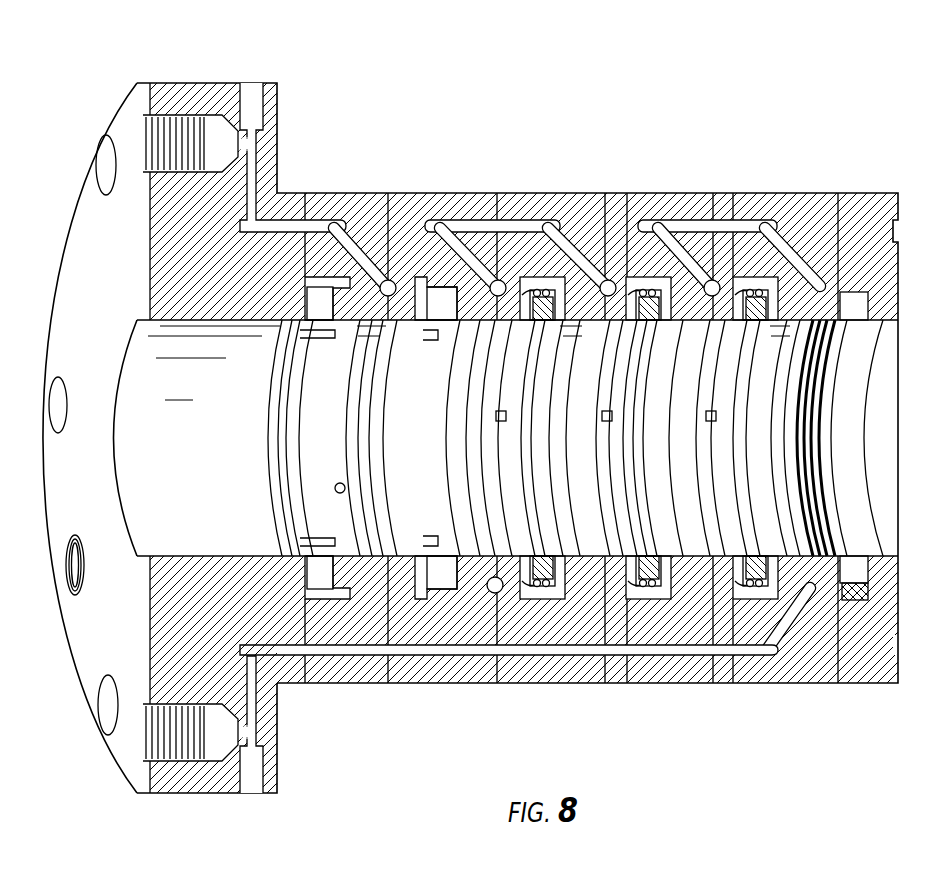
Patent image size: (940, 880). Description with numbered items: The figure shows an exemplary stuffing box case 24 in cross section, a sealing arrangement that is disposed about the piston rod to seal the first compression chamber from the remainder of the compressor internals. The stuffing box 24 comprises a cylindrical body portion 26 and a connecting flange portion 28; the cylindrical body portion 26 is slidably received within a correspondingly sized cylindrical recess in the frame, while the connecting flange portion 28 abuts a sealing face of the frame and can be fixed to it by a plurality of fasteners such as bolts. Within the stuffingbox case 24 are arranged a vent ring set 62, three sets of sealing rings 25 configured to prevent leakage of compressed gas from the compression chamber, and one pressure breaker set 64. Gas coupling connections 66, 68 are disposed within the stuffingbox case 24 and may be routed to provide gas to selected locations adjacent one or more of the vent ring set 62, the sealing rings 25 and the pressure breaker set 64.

The stuffing box 24 is at (470, 449).
The sealing rings 25 is at (552, 193).
The cylindrical body portion 26 is at (572, 683).
The connecting flange portion 28 is at (204, 88).
The vent ring set 62 is at (320, 695).
The pressure breaker set 64 is at (838, 692).
The gas coupling connection 66 is at (144, 140).
The gas coupling connection 68 is at (145, 735).